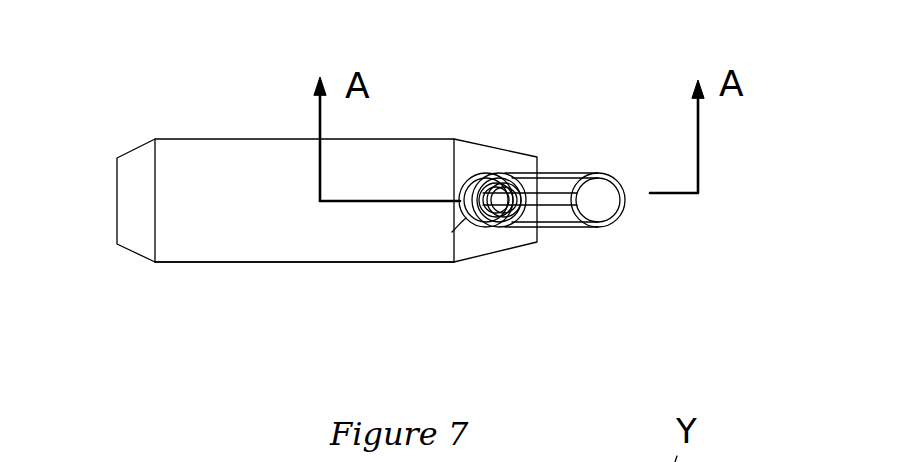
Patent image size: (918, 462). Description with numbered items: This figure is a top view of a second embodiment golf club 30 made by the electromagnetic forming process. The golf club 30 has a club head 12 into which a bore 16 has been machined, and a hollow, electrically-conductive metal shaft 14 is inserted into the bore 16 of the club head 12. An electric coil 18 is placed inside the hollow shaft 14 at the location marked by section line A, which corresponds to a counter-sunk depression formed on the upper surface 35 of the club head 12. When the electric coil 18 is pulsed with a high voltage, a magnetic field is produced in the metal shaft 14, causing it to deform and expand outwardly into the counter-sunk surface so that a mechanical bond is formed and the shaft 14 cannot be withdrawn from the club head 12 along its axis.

The golf club 30 is at (105, 127).
The club head 12 is at (250, 216).
The upper surface 35 is at (359, 246).
The electric coil 18 is at (488, 157).
The hollow shaft 14 is at (569, 172).
The bore 16 is at (452, 232).